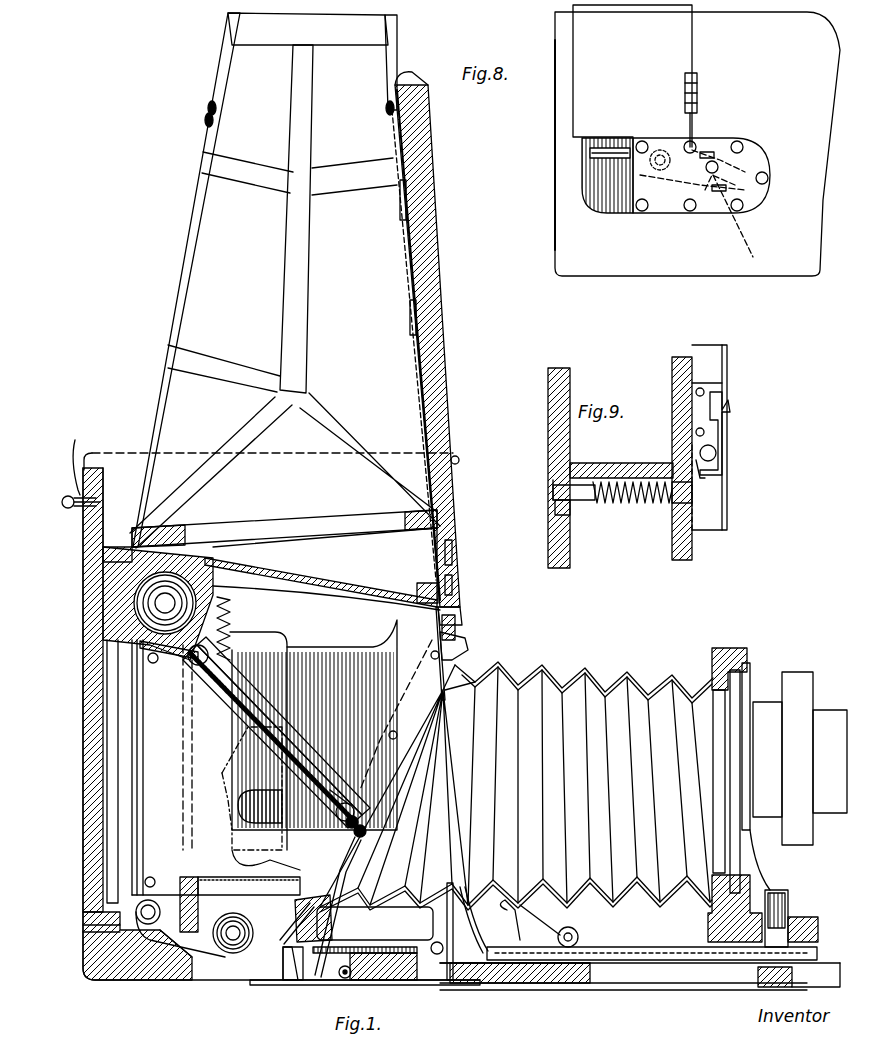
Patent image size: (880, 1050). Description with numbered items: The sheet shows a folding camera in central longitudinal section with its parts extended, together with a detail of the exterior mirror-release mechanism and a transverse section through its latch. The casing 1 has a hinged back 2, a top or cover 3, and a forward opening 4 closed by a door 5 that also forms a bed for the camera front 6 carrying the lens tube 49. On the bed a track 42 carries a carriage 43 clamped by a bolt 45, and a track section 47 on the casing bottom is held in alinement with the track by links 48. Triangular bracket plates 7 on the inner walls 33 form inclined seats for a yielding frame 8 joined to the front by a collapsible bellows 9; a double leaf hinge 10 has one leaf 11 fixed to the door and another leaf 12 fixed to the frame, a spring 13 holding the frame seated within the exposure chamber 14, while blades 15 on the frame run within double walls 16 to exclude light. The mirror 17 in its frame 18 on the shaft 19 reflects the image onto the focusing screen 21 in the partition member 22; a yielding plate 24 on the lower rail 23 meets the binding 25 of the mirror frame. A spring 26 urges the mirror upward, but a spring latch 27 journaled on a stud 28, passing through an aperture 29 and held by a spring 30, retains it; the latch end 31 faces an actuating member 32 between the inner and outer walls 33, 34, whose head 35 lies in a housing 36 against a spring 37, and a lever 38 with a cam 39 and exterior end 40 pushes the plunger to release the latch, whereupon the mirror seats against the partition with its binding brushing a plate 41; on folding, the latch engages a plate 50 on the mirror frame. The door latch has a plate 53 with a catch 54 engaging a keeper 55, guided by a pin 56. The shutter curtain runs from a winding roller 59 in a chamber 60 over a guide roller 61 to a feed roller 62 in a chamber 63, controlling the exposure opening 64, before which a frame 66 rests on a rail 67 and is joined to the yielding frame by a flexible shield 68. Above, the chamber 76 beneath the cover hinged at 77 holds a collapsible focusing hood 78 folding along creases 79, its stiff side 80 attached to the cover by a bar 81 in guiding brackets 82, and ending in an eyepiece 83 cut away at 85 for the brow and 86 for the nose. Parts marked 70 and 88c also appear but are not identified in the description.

In FIG. 1, the box or casing 1 is at (442, 515).
In FIG. 8, the box or casing 1 is at (555, 105).
In FIG. 1, the back 2 is at (90, 738).
In FIG. 1, the top 3 is at (432, 283).
In FIG. 1, the forward opening 4 is at (468, 930).
In FIG. 1, the door 5 is at (590, 983).
In FIG. 1, the camera front 6 is at (730, 648).
In FIG. 1, the triangular bracket plates 7 is at (442, 931).
In FIG. 1, the yielding frame 8 is at (466, 645).
In FIG. 9, the yielding frame 8 is at (705, 380).
In FIG. 1, the collapsible bellows 9 is at (587, 678).
In FIG. 8, the collapsible bellows 9 is at (708, 140).
In FIG. 1, the double leaf hinge 10 is at (405, 984).
In FIG. 1, the leaf 11 is at (470, 984).
In FIG. 1, the leaf 12 is at (83, 927).
In FIG. 1, the spring 13 is at (290, 965).
In FIG. 1, the exposure chamber 14 is at (314, 723).
In FIG. 1, the blade 15 is at (399, 715).
In FIG. 9, the blade 15 is at (727, 362).
In FIG. 1, the double walls 16 is at (209, 763).
In FIG. 1, the mirror 17 is at (240, 700).
In FIG. 1, the mirror frame 18 is at (262, 690).
In FIG. 1, the shaft 19 is at (192, 666).
In FIG. 1, the focusing screen 21 is at (325, 572).
In FIG. 1, the partition member 22 is at (196, 545).
In FIG. 1, the lower rail 23 is at (327, 918).
In FIG. 1, the yielding plate 24 is at (348, 858).
In FIG. 1, the binding 25 is at (366, 828).
In FIG. 1, the spring 26 is at (231, 612).
In FIG. 1, the spring latch 27 is at (352, 808).
In FIG. 9, the spring latch 27 is at (724, 420).
In FIG. 1, the stud 28 is at (240, 800).
In FIG. 9, the stud 28 is at (717, 455).
In FIG. 1, the aperture 29 is at (355, 812).
In FIG. 9, the spring 30 is at (706, 470).
In FIG. 1, the latch end 31 is at (275, 860).
In FIG. 9, the latch end 31 is at (708, 500).
In FIG. 1, the actuating member 32 is at (290, 925).
In FIG. 9, the actuating member 32 is at (672, 500).
In FIG. 9, the inner walls 33 is at (672, 548).
In FIG. 8, the outer wall 34 is at (697, 144).
In FIG. 9, the outer wall 34 is at (568, 545).
In FIG. 8, the head 35 is at (720, 168).
In FIG. 9, the head 35 is at (580, 500).
In FIG. 8, the housing 36 is at (700, 210).
In FIG. 9, the housing 36 is at (556, 508).
In FIG. 9, the spring 37 is at (620, 480).
In FIG. 8, the lever 38 is at (702, 176).
In FIG. 9, the cam 39 is at (553, 492).
In FIG. 8, the lever end 40 is at (600, 155).
In FIG. 1, the plate 41 is at (462, 668).
In FIG. 1, the track 42 is at (610, 953).
In FIG. 1, the carriage 43 is at (808, 916).
In FIG. 1, the bolt 45 is at (778, 890).
In FIG. 1, the track section 47 is at (373, 943).
In FIG. 1, the links 48 is at (555, 915).
In FIG. 1, the lens tube 49 is at (795, 680).
In FIG. 1, the plate 50 is at (252, 788).
In FIG. 1, the plate 53 is at (455, 550).
In FIG. 1, the catch 54 is at (458, 622).
In FIG. 1, the keeper 55 is at (800, 987).
In FIG. 1, the pin 56 is at (455, 605).
In FIG. 1, the winding roller 59 is at (195, 585).
In FIG. 1, the chamber 60 is at (147, 635).
In FIG. 1, the guide roller 61 is at (146, 918).
In FIG. 1, the feed roller 62 is at (232, 937).
In FIG. 1, the chamber 63 is at (233, 962).
In FIG. 1, the exposure opening 64 is at (118, 868).
In FIG. 1, the frame 66 is at (170, 890).
In FIG. 1, the rail 67 is at (196, 908).
In FIG. 1, the flexible shield 68 is at (250, 880).
In FIG. 1, the bottom wall 70 is at (92, 955).
In FIG. 1, the chamber 76 is at (325, 565).
In FIG. 1, the hinge 77 is at (460, 460).
In FIG. 1, the focusing hood 78 is at (191, 280).
In FIG. 1, the creases 79 is at (285, 296).
In FIG. 1, the side 80 is at (408, 318).
In FIG. 1, the bar 81 is at (398, 215).
In FIG. 1, the guiding brackets 82 is at (418, 248).
In FIG. 1, the eyepiece 83 is at (308, 29).
In FIG. 1, the cut-away portion 85 is at (396, 64).
In FIG. 1, the cut-away portion 86 is at (216, 88).
In FIG. 8, the door 88c is at (632, 76).